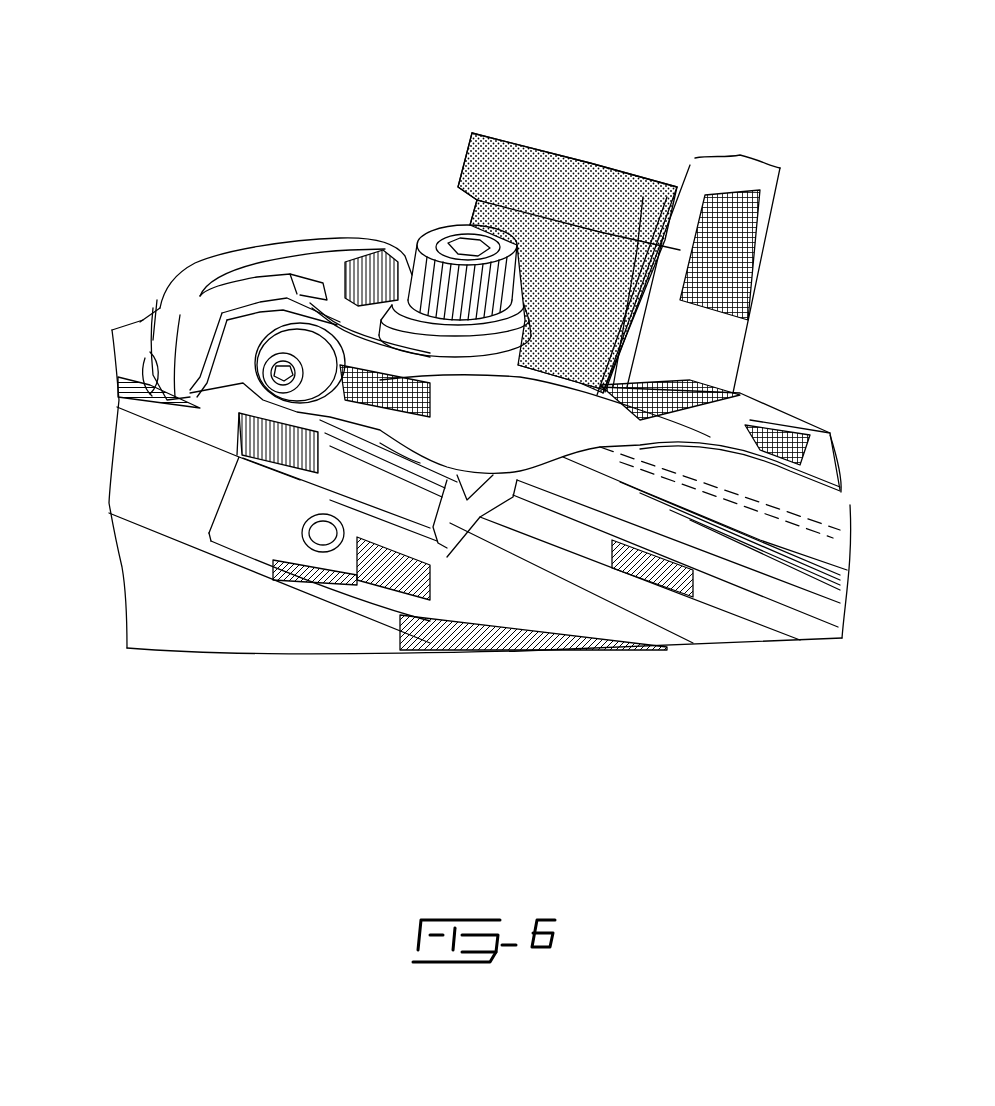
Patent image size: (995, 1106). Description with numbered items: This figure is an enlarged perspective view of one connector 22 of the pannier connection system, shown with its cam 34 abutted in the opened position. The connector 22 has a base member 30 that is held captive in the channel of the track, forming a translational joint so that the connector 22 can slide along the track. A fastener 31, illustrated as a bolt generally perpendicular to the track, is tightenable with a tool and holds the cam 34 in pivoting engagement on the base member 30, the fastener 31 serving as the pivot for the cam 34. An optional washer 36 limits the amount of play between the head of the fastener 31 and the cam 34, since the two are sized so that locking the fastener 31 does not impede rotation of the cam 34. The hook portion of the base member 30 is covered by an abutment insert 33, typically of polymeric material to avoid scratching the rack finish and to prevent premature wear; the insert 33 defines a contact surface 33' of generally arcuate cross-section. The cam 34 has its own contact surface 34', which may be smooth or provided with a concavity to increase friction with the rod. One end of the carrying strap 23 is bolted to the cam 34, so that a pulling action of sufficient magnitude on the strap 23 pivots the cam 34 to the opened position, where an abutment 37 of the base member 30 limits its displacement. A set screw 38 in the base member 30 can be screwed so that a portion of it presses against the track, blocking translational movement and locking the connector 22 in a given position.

The connector 22 is at (560, 250).
The carrying strap 23 is at (513, 423).
The base member 30 is at (452, 527).
The fastener 31 is at (412, 232).
The abutment insert 33 is at (637, 245).
The contact surface 33' is at (502, 127).
The cam 34 is at (276, 303).
The contact surface 34' is at (94, 348).
The washer 36 is at (382, 300).
The abutment 37 is at (290, 418).
The set screw 38 is at (333, 543).